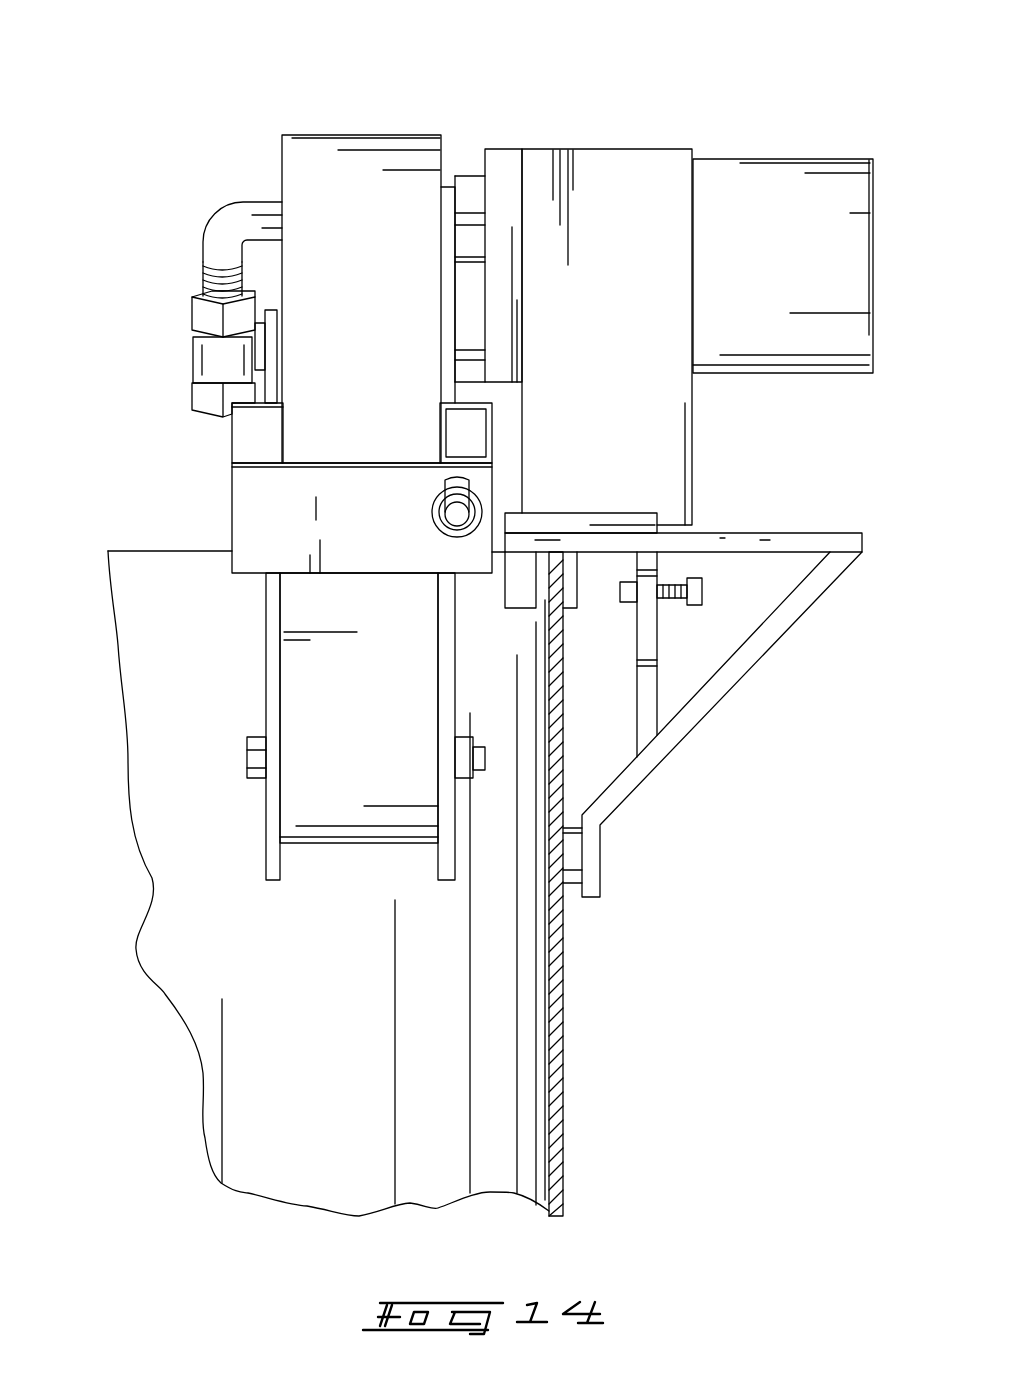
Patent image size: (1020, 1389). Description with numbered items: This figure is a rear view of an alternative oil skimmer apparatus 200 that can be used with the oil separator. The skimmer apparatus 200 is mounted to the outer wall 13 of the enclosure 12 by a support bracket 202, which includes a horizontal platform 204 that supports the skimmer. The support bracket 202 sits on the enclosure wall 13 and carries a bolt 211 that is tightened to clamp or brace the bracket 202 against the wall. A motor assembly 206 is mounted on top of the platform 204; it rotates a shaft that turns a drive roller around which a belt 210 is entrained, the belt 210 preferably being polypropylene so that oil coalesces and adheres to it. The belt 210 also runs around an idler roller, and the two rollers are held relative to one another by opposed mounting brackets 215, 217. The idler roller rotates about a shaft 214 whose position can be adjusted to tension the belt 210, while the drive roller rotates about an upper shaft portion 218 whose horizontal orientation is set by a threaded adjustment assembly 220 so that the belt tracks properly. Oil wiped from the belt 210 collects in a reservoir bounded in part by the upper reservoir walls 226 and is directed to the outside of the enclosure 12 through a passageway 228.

The enclosure 12 is at (139, 545).
The outer wall 13 is at (557, 1020).
The skimmer apparatus 200 is at (598, 46).
The support bracket 202 is at (765, 660).
The horizontal platform 204 is at (793, 546).
The motor assembly 206 is at (666, 141).
The belt 210 is at (380, 313).
The bolt 211 is at (702, 590).
The shaft 214 is at (485, 752).
The mounting bracket 215 is at (270, 808).
The mounting bracket 217 is at (447, 682).
The upper shaft portion 218 is at (250, 213).
The threaded adjustment assembly 220 is at (178, 266).
The upper reservoir walls 226 is at (262, 441).
The passageway 228 is at (455, 482).